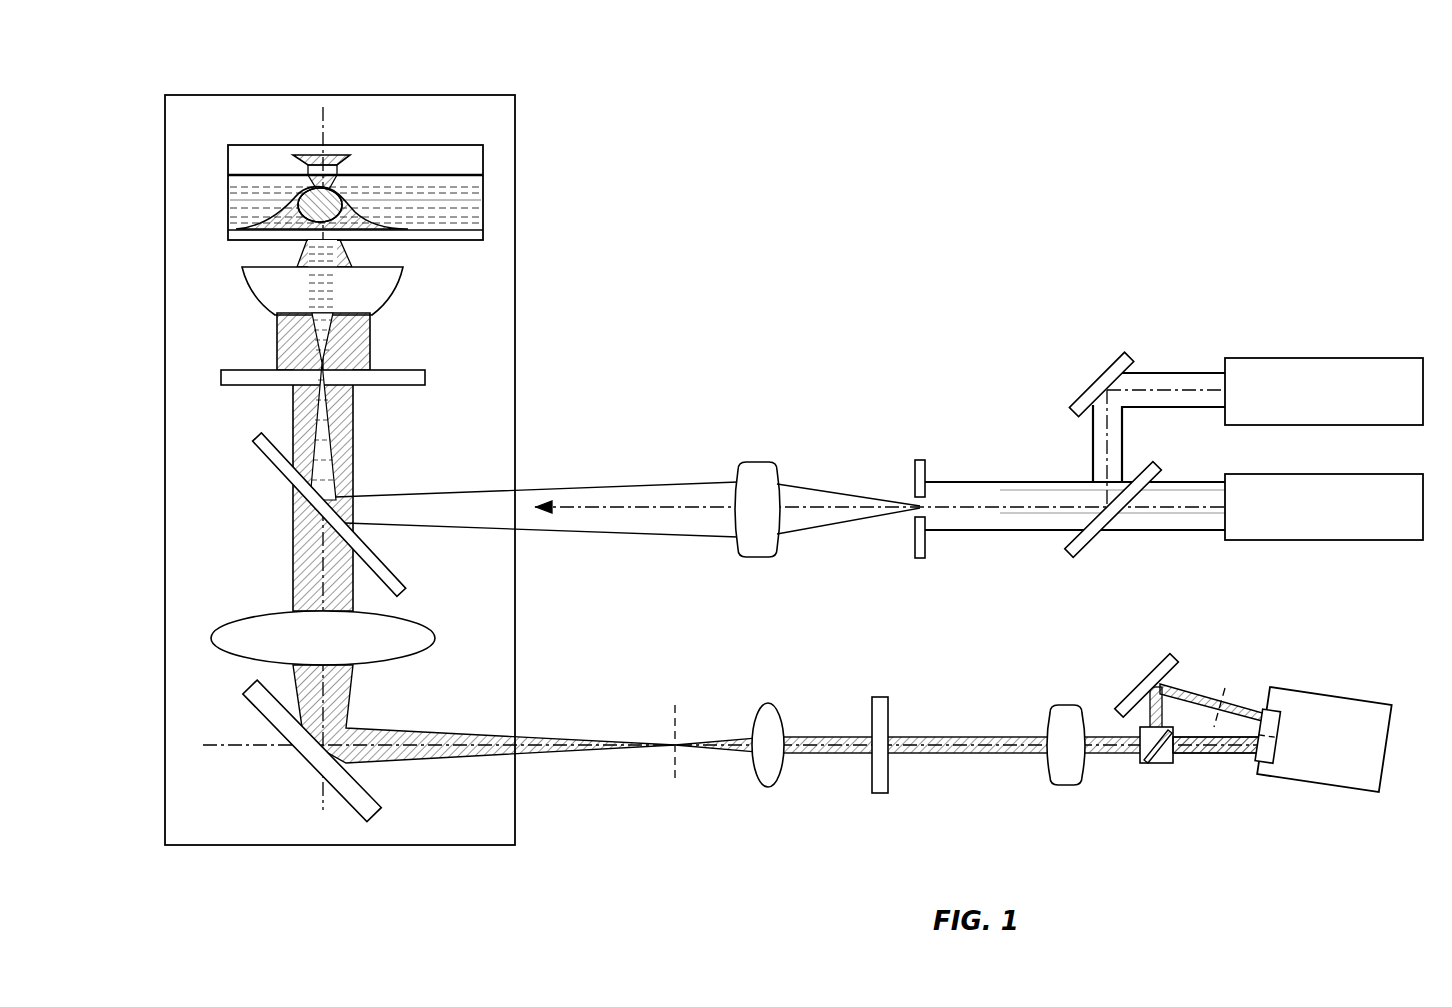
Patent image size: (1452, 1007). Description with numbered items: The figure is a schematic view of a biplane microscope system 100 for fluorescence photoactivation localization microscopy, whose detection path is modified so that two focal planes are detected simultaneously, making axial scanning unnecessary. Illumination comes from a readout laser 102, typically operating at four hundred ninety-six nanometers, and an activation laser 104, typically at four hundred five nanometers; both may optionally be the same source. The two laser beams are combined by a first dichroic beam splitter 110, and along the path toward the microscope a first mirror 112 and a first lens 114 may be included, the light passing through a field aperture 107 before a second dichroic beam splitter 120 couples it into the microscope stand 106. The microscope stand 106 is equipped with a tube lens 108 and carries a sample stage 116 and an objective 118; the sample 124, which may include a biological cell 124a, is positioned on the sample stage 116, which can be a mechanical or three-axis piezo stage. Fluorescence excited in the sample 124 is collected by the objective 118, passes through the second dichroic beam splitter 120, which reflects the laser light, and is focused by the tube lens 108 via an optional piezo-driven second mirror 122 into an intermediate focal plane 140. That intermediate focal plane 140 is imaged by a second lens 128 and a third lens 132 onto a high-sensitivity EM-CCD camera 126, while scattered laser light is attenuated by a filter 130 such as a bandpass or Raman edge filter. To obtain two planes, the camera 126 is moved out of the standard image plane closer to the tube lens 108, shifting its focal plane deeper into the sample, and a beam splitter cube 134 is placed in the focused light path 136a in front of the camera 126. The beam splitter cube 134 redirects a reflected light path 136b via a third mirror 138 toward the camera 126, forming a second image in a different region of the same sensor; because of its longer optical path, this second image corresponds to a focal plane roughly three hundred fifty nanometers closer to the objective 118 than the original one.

The biplane microscope system 100 is at (958, 130).
The readout laser 102 is at (1348, 543).
The activation laser 104 is at (1315, 358).
The microscope stand 106 is at (456, 95).
The field aperture 107 is at (925, 462).
The tube lens 108 is at (210, 636).
The first dichroic beam splitter 110 is at (1078, 556).
The first mirror 112 is at (1110, 362).
The first lens 114 is at (757, 462).
The sample stage 116 is at (483, 175).
The objective 118 is at (403, 283).
The second dichroic beam splitter 120 is at (255, 460).
The second mirror 122 is at (345, 808).
The sample 124 is at (345, 185).
The biological cell 124a is at (298, 205).
The EM-CCD camera 126 is at (1310, 698).
The second lens 128 is at (768, 788).
The filter 130 is at (880, 795).
The third lens 132 is at (1062, 788).
The beam splitter cube 134 is at (1155, 765).
The focused light path 136a is at (1225, 755).
The reflected light path 136b is at (1195, 695).
The third mirror 138 is at (1128, 690).
The intermediate focal plane 140 is at (677, 768).